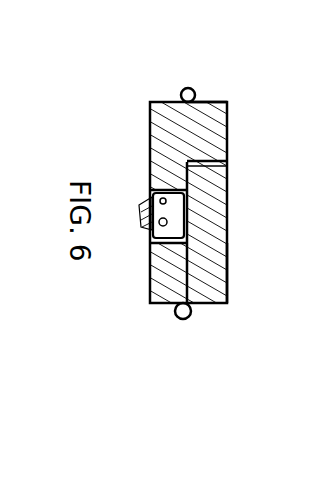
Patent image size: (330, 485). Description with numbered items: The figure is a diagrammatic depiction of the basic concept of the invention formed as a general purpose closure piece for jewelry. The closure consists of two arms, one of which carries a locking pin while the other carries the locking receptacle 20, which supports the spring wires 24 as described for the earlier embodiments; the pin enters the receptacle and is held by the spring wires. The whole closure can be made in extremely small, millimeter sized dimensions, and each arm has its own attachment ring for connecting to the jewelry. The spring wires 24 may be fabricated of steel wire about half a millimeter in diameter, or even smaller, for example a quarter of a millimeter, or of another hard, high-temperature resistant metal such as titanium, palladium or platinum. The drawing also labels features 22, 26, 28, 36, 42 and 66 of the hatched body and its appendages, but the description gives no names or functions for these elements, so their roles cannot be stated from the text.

The locking receptacle 20 is at (183, 89).
The housing 22 is at (150, 188).
The spring wires 24 is at (150, 188).
The outer wall 26 is at (224, 304).
The outlet tube 28 is at (180, 320).
The inner block 36 is at (251, 273).
The sensor module 42 is at (152, 213).
The top portion 66 is at (222, 100).